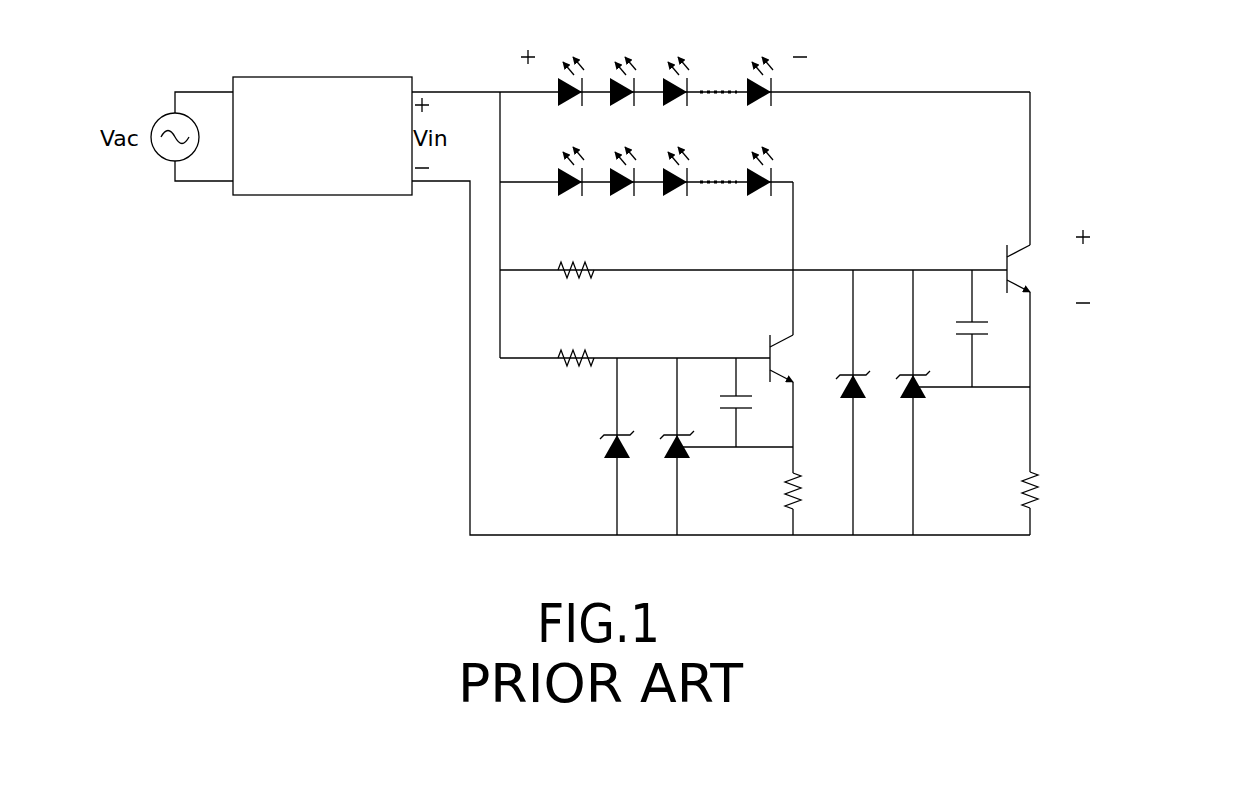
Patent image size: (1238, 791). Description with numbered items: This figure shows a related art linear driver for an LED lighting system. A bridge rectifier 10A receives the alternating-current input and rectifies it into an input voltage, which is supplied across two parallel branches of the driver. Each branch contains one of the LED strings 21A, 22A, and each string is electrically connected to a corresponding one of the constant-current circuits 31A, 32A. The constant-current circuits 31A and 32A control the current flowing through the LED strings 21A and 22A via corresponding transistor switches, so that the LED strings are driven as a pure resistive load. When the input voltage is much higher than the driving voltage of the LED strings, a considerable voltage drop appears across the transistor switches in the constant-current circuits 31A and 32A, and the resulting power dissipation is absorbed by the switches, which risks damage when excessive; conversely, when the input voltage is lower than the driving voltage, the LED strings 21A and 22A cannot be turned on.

The bridge rectifier 10A is at (323, 84).
The LED string 21A is at (760, 108).
The LED string 22A is at (760, 198).
The constant-current circuit 31A is at (1042, 370).
The constant-current circuit 32A is at (815, 490).